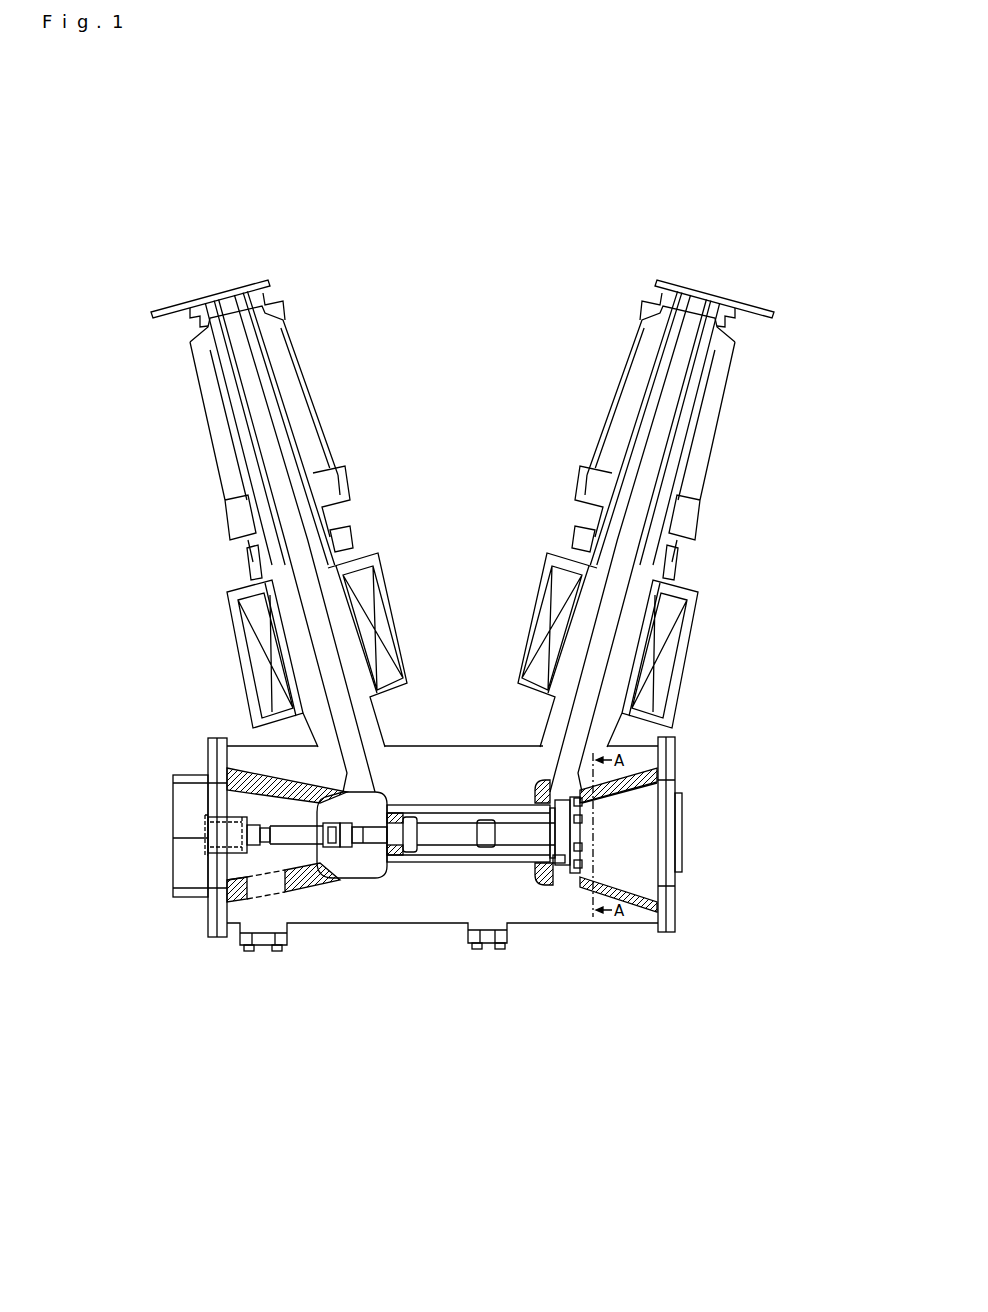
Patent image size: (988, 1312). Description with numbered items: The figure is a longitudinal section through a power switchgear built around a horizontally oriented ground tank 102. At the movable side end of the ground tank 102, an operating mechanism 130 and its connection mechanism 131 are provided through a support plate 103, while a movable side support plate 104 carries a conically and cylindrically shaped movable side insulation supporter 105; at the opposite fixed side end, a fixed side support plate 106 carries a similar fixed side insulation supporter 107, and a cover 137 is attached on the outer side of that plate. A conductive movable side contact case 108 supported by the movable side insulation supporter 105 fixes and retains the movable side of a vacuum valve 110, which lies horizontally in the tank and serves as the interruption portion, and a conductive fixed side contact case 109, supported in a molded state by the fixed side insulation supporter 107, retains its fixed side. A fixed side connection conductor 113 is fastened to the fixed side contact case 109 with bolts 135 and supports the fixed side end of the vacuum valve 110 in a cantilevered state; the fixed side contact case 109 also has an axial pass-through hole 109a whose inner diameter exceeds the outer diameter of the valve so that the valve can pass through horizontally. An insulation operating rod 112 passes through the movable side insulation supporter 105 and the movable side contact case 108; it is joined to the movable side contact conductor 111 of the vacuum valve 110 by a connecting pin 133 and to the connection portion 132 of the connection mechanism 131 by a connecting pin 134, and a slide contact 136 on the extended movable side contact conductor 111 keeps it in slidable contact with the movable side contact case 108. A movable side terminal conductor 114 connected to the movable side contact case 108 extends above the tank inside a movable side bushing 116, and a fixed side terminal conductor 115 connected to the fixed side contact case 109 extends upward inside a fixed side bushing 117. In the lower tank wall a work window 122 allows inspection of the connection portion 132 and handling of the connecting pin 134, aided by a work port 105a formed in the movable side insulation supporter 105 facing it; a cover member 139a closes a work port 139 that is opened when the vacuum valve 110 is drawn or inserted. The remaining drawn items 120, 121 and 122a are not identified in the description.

The ground tank 102 is at (393, 800).
The support plate 103 is at (182, 757).
The movable side support plate 104 is at (208, 760).
The movable side insulation supporter 105 is at (253, 778).
The work port 105a is at (290, 895).
The fixed side support plate 106 is at (658, 737).
The fixed side insulation supporter 107 is at (640, 762).
The movable side contact case 108 is at (425, 683).
The fixed side contact case 109 is at (545, 885).
The pass-through hole 109a is at (560, 865).
The vacuum valve 110 is at (478, 805).
The movable side contact conductor 111 is at (440, 830).
The insulation operating rod 112 is at (300, 830).
The fixed side connection conductor 113 is at (600, 836).
The movable side terminal conductor 114 is at (308, 590).
The fixed side terminal conductor 115 is at (613, 590).
The movable side bushing 116 is at (292, 410).
The fixed side bushing 117 is at (633, 410).
The left mounting flange 120 is at (172, 313).
The right mounting flange 121 is at (748, 312).
The work window 122 is at (258, 945).
The left flange bolt 122a is at (250, 950).
The operating mechanism 130 is at (165, 785).
The connection mechanism 131 is at (187, 830).
The connection portion 132 is at (245, 833).
The connecting pin 133 is at (317, 848).
The connecting pin 134 is at (235, 882).
The bolts 135 is at (605, 792).
The slide contact 136 is at (355, 848).
The cover 137 is at (670, 762).
The work port 139 is at (488, 945).
The cover member 139a is at (478, 949).